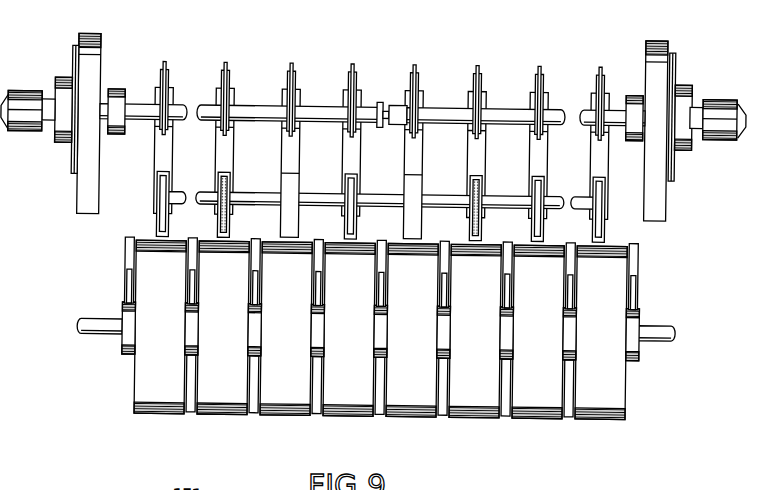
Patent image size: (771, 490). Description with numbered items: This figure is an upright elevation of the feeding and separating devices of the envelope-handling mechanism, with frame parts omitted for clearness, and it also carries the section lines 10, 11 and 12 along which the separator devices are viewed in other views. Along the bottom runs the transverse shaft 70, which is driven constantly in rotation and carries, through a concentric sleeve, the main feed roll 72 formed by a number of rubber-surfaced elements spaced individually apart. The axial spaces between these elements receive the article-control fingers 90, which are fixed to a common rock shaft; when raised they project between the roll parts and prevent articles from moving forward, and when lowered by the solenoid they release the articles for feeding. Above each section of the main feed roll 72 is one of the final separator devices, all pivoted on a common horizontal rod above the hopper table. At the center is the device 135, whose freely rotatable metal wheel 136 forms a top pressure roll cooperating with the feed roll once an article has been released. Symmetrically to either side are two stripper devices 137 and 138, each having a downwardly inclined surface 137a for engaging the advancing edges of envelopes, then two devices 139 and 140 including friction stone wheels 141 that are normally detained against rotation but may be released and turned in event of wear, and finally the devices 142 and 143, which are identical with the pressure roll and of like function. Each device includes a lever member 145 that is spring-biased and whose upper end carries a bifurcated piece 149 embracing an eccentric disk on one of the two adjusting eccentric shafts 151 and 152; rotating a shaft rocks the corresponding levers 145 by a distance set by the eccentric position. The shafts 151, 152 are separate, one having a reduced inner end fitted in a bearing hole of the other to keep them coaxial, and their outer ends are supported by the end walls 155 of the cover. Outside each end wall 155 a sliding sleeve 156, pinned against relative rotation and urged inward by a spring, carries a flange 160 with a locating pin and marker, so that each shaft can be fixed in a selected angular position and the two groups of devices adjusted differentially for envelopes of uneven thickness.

The section line 10- 10 is at (212, 57).
The section line 11- 11 is at (343, 56).
The section line 12- 12 is at (282, 56).
The transverse shaft 70 is at (94, 322).
The main feed roll 72 is at (276, 393).
The article-control fingers 90 is at (381, 269).
The central separator device 135 is at (353, 63).
The metal wheel 136 is at (360, 227).
The stripper device 137 is at (417, 64).
The downwardly inclined surface 137a is at (288, 227).
The stripper device 138 is at (290, 63).
The friction stone wheel device 139 is at (477, 64).
The friction stone wheel device 140 is at (225, 63).
The friction stone wheel 141 is at (227, 228).
The pressure roll device 142 is at (540, 64).
The pressure roll device 143 is at (163, 65).
The lever member 145 is at (216, 155).
The bifurcated piece 149 is at (104, 489).
The adjusting eccentric shaft 151 is at (252, 108).
The adjusting eccentric shaft 152 is at (443, 108).
The end wall 155 is at (88, 204).
The sliding sleeve 156 is at (62, 94).
The flange 160 is at (68, 155).